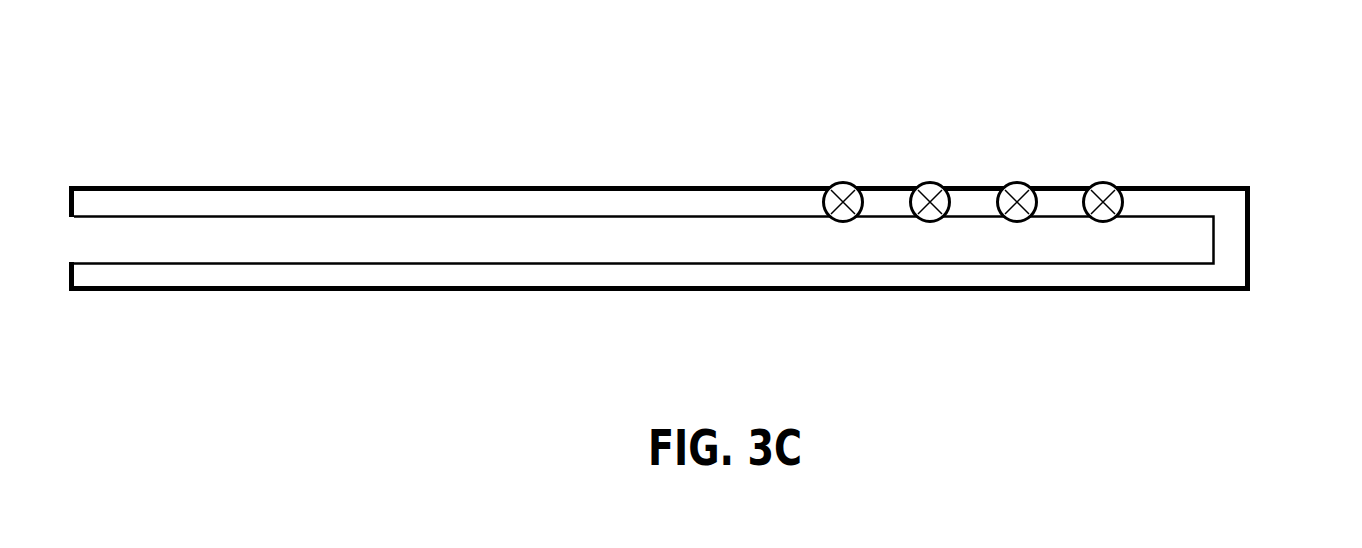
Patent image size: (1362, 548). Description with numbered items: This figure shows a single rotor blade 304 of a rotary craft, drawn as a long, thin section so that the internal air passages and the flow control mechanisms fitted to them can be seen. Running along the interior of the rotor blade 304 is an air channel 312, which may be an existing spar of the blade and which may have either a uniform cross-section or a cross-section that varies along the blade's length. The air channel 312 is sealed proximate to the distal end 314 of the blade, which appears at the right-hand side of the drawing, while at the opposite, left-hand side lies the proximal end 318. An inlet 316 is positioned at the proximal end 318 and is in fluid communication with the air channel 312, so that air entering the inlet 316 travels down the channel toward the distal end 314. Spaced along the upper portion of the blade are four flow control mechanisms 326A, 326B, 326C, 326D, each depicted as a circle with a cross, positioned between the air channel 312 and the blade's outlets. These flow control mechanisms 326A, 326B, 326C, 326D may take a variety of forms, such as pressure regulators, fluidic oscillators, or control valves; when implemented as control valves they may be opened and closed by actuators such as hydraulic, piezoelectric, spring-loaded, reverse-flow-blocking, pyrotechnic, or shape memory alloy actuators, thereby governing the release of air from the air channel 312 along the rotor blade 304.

The rotor blade 304 is at (525, 108).
The air channel 312 is at (595, 235).
The distal end 314 is at (1249, 186).
The inlet 316 is at (69, 235).
The proximal end 318 is at (70, 187).
The flow control mechanism 326A is at (844, 194).
The flow control mechanism 326B is at (931, 194).
The flow control mechanism 326C is at (1018, 194).
The flow control mechanism 326D is at (1104, 194).